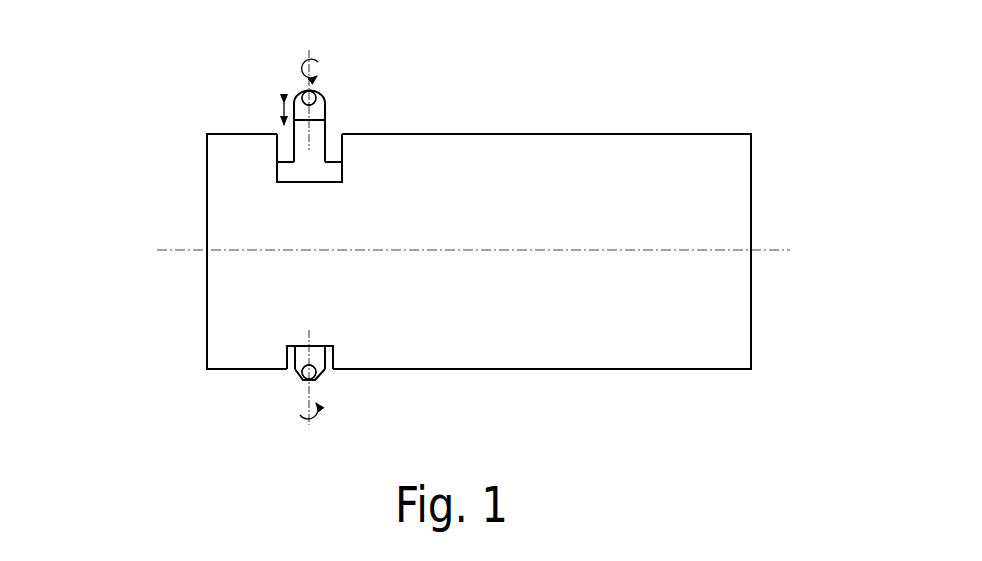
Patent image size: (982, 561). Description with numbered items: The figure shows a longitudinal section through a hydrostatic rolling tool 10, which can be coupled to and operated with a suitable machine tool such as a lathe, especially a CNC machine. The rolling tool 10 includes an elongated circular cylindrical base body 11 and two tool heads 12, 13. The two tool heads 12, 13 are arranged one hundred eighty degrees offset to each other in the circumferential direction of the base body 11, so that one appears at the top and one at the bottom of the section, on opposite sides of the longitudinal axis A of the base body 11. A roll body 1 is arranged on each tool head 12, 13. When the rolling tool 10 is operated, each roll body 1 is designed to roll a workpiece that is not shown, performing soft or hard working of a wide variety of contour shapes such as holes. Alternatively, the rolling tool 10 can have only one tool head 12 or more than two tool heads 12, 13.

The hydrostatic rolling tool 10 is at (140, 112).
The base body 11 is at (578, 155).
The tool head 12 is at (338, 110).
The tool head 13 is at (291, 375).
The roll body 1 is at (298, 84).
The longitudinal axis A is at (511, 250).